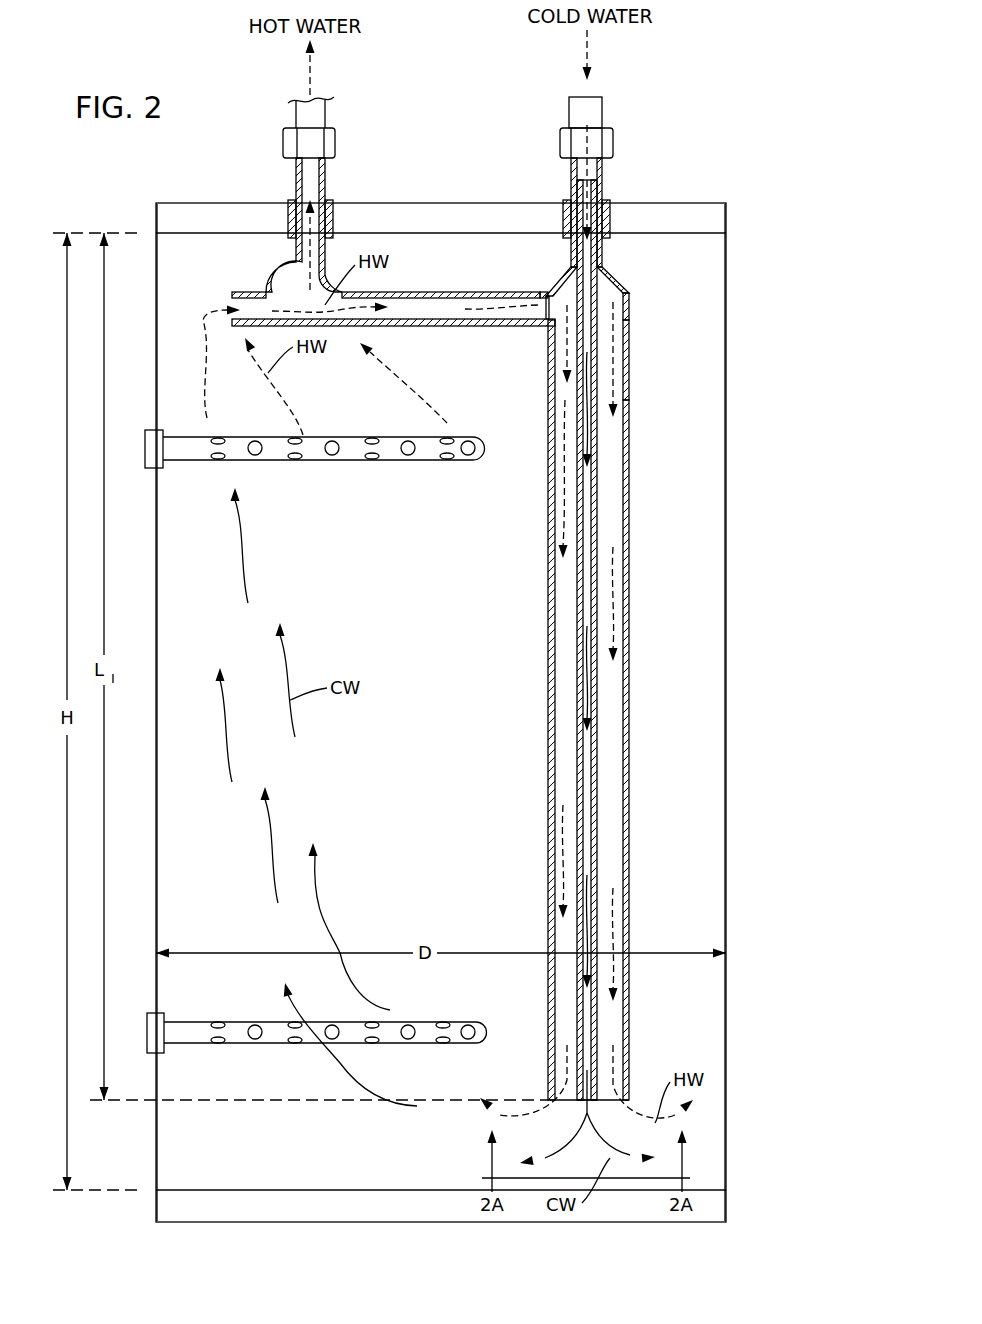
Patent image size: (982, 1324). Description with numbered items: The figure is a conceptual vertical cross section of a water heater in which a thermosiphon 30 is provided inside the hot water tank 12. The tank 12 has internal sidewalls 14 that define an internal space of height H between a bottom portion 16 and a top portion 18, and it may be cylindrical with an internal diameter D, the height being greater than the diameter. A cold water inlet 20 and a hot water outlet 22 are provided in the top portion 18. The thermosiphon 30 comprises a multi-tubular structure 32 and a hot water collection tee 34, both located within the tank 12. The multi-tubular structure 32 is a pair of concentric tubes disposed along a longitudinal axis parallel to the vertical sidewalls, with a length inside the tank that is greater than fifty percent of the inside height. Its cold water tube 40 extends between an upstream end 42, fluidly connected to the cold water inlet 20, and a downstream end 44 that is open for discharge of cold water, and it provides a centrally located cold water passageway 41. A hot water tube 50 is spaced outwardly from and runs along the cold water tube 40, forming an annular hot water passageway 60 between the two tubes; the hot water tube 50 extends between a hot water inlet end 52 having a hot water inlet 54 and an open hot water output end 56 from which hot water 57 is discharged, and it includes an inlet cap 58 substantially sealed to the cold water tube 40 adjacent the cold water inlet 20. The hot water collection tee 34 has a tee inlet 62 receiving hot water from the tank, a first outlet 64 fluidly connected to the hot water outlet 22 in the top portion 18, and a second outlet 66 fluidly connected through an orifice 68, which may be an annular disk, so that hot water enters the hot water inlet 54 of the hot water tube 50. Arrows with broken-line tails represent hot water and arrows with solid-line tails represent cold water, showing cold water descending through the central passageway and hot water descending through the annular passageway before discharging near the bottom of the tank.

The tank 12 is at (726, 468).
The internal sidewalls 14 is at (430, 240).
The bottom portion 16 is at (235, 1190).
The top portion 18 is at (690, 233).
The cold water inlet 20 is at (603, 183).
The hot water outlet 22 is at (325, 176).
The thermosiphon 30 is at (393, 351).
The multi-tubular structure 32 is at (548, 390).
The hot water collection tee 34 is at (482, 328).
The cold water tube 40 is at (597, 790).
The cold water passageway 41 is at (588, 825).
The upstream end 42 is at (612, 280).
The downstream end 44 is at (580, 1098).
The hot water tube 50 is at (630, 770).
The hot water inlet end 52 is at (628, 296).
The hot water inlet 54 is at (573, 277).
The hot water output end 56 is at (630, 1108).
The hot water 57 is at (543, 1120).
The inlet cap 58 is at (620, 288).
The annular hot water passageway 60 is at (608, 858).
The tee inlet 62 is at (232, 292).
The first outlet 64 is at (330, 238).
The second outlet 66 is at (548, 290).
The orifice 68 is at (540, 296).